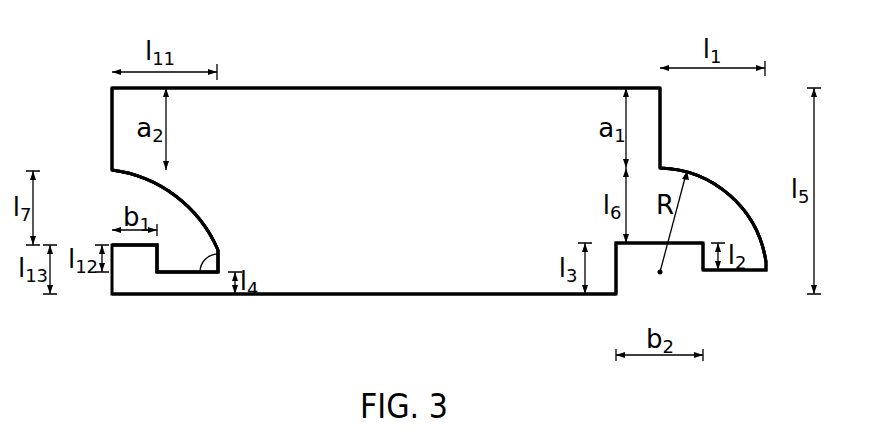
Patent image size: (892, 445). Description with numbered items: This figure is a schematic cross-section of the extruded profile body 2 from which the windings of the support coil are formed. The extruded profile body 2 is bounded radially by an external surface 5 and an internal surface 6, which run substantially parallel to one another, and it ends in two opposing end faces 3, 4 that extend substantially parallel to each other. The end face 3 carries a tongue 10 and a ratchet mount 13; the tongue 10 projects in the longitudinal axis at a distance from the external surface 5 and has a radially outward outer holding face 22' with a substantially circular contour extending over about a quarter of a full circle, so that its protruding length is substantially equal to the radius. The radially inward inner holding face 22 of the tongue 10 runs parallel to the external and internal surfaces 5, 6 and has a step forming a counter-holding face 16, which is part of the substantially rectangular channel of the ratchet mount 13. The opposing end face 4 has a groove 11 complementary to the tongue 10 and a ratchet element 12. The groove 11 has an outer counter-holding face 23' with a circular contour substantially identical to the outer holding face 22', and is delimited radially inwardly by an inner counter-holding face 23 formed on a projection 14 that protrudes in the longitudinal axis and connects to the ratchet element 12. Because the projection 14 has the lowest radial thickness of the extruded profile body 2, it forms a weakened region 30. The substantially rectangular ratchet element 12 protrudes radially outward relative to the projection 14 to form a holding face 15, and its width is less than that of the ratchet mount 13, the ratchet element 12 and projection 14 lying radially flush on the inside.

The extruded profile body 2 is at (391, 197).
The end face 3 is at (660, 115).
The end face 4 is at (112, 118).
The external surface 5 is at (385, 88).
The internal surface 6 is at (386, 294).
The tongue 10 is at (728, 212).
The groove 11 is at (118, 195).
The ratchet element 12 is at (133, 281).
The ratchet mount 13 is at (643, 274).
The projection 14 is at (190, 288).
The holding face 15 is at (158, 252).
The counter-holding face 16 is at (703, 270).
The inner holding face 22 is at (734, 301).
The outer holding face 22' is at (713, 199).
The inner counter-holding face 23 is at (248, 250).
The outer counter-holding face 23' is at (170, 200).
The weakened region 30 is at (164, 326).